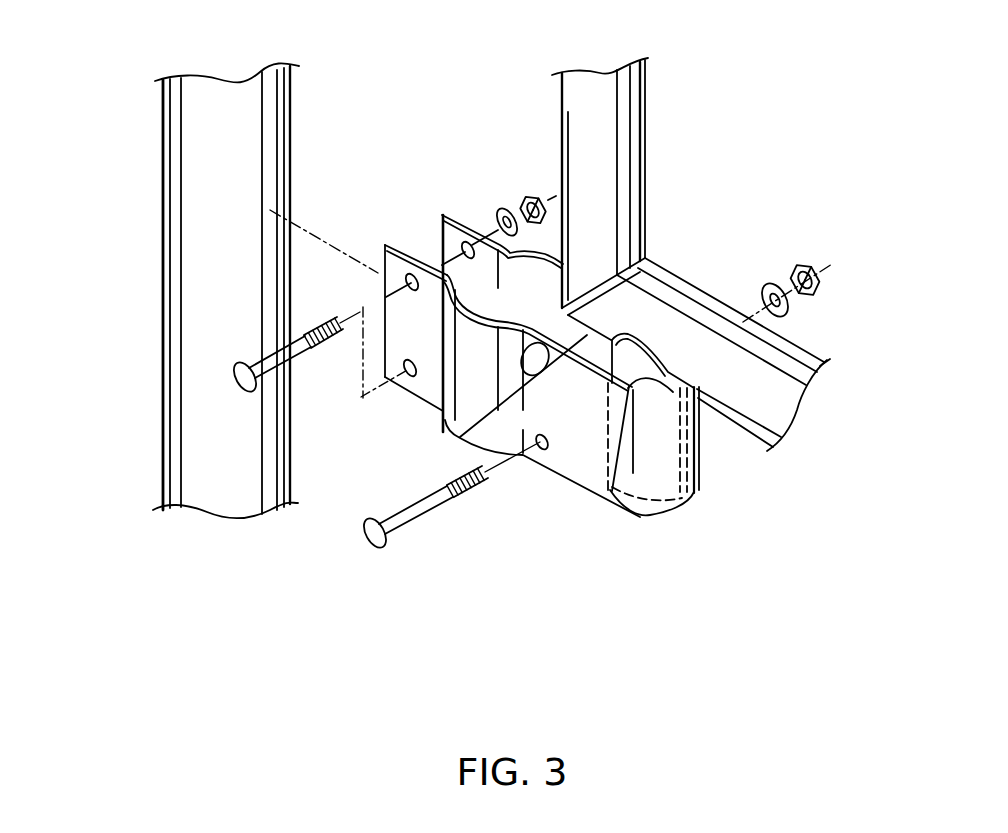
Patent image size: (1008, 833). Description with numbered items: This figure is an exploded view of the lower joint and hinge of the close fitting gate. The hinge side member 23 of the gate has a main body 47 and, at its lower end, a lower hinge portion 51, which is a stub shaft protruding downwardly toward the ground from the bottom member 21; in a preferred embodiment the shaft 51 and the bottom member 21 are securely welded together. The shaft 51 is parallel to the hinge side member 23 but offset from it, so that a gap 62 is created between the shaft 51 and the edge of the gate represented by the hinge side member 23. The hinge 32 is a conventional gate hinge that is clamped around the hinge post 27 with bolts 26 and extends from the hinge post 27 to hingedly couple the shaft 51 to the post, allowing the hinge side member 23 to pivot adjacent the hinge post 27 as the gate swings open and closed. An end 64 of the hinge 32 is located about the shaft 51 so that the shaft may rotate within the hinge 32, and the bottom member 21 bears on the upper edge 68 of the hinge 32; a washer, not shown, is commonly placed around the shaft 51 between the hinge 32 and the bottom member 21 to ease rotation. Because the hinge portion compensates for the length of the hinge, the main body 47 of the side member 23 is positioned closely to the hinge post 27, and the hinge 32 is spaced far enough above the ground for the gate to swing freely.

The bottom member 21 is at (780, 373).
The hinge side member 23 is at (643, 85).
The bolts 26 is at (318, 347).
The hinge post 27 is at (198, 258).
The hinge 32 is at (573, 465).
The main body 47 is at (605, 153).
The lower hinge portion 51 is at (637, 368).
The gap 62 is at (462, 437).
The end 64 is at (700, 489).
The upper edge 68 is at (611, 392).